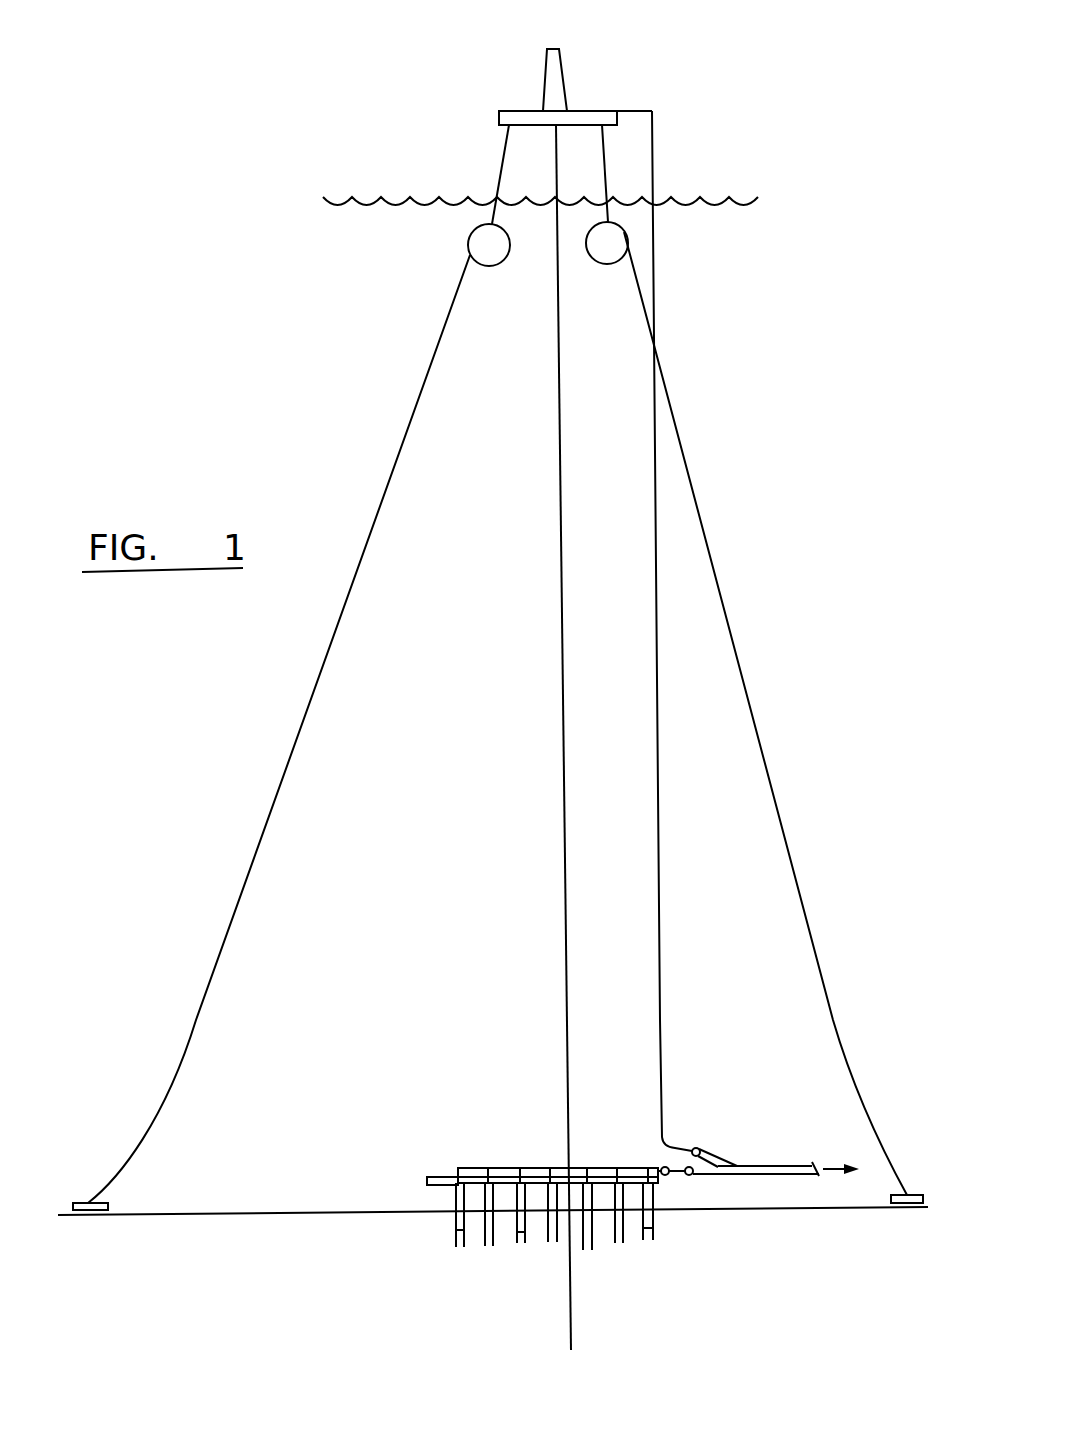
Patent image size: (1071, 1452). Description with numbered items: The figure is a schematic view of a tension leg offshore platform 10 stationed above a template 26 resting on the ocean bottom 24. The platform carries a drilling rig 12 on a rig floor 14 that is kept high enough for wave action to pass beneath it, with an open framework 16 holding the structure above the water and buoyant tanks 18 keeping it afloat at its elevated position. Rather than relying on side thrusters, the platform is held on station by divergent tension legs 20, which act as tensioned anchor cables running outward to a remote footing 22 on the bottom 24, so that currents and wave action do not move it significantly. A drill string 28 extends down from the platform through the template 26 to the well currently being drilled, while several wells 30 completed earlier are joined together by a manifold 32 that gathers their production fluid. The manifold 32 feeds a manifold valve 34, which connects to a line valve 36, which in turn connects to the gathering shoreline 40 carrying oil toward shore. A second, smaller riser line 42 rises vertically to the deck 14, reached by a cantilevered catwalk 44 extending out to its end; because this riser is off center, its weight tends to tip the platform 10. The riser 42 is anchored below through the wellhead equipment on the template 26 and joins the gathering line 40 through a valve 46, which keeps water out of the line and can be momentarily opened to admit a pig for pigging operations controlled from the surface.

The offshore platform 10 is at (455, 147).
The drilling rig 12 is at (555, 82).
The rig floor 14 is at (515, 115).
The framework 16 is at (608, 162).
The buoyant tanks 18 is at (492, 248).
The tension legs 20 is at (422, 372).
The footing 22 is at (98, 1212).
The bottom 24 is at (287, 1213).
The template 26 is at (435, 1177).
The drill string 28 is at (557, 465).
The wells 30 is at (457, 1230).
The manifold 32 is at (503, 1167).
The manifold valve 34 is at (658, 1166).
The line valve 36 is at (692, 1175).
The gathering shoreline 40 is at (770, 1173).
The riser line 42 is at (655, 257).
The cantilevered catwalk 44 is at (640, 107).
The valve 46 is at (698, 1148).